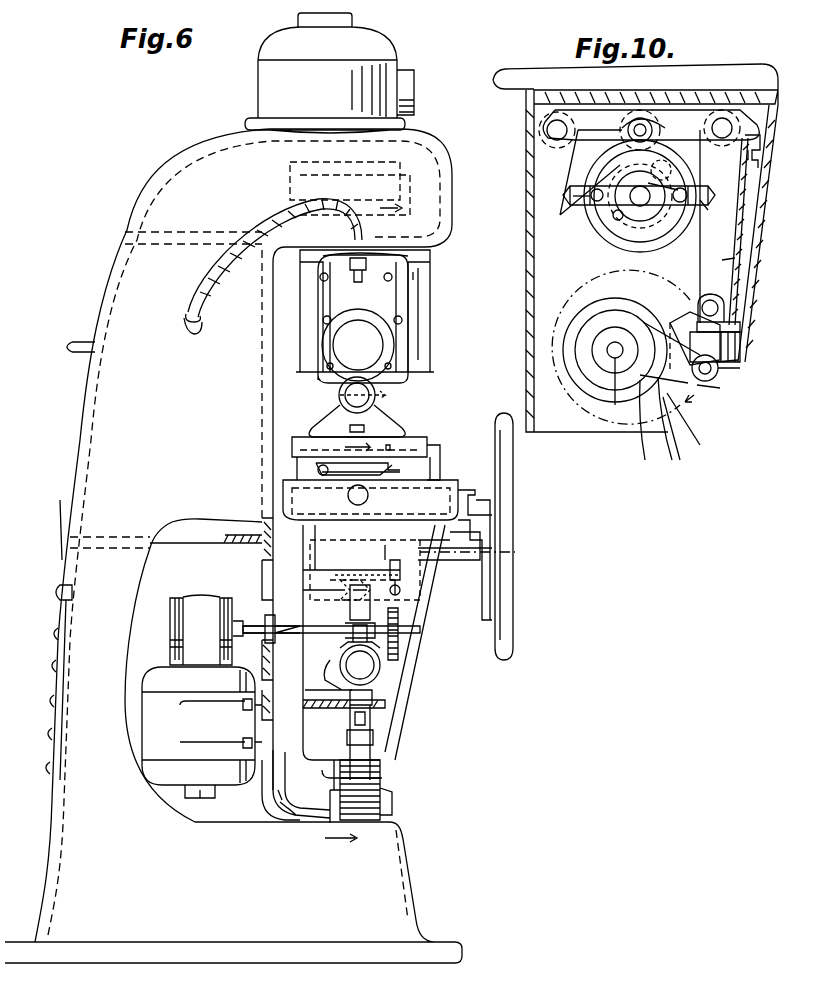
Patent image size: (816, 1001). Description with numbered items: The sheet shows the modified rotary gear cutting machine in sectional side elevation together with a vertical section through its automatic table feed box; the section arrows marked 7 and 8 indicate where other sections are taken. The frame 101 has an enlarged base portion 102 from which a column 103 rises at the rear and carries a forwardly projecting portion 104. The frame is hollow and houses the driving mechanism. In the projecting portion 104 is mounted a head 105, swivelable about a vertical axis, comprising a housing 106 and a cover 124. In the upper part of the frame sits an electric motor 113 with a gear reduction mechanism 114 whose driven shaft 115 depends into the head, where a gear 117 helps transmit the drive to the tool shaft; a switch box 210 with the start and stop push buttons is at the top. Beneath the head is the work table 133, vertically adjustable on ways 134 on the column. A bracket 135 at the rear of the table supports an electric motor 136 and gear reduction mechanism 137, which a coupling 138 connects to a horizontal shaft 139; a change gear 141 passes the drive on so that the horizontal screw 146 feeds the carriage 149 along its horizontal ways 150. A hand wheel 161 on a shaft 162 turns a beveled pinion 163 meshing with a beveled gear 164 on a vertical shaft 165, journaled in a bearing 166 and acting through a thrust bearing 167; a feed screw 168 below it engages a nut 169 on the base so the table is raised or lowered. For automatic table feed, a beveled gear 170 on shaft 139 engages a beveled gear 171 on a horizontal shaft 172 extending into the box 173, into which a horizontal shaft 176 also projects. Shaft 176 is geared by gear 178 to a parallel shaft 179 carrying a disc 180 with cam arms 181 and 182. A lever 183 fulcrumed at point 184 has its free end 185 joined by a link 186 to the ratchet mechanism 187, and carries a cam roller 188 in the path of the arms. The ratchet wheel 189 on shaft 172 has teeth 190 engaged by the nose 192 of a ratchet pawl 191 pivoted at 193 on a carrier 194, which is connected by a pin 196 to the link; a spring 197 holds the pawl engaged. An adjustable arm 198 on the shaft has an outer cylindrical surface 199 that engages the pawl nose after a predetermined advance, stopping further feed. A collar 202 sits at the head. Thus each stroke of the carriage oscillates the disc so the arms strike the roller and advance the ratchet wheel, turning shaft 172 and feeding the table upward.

In FIG. 6, the frame 101 is at (70, 513).
In FIG. 6, the base portion 102 is at (412, 845).
In FIG. 6, the column 103 is at (125, 287).
In FIG. 6, the forwardly projecting portion 104 is at (430, 204).
In FIG. 6, the head 105 is at (432, 320).
In FIG. 6, the housing 106 is at (422, 297).
In FIG. 6, the electric motor 113 is at (275, 82).
In FIG. 6, the gear reduction mechanism 114 is at (367, 185).
In FIG. 6, the driven shaft 115 is at (326, 222).
In FIG. 10, the gear 117 is at (700, 168).
In FIG. 6, the cover 124 is at (335, 300).
In FIG. 6, the work table 133 is at (410, 650).
In FIG. 6, the ways 134 is at (318, 768).
In FIG. 6, the bracket 135 is at (265, 710).
In FIG. 10, the bracket 135 is at (738, 320).
In FIG. 6, the electric motor 136 is at (160, 758).
In FIG. 6, the gear reduction mechanism 137 is at (194, 598).
In FIG. 6, the coupling 138 is at (268, 622).
In FIG. 6, the horizontal shaft 139 is at (320, 630).
In FIG. 6, the change gear 141 is at (400, 632).
In FIG. 6, the horizontal screw 146 is at (365, 498).
In FIG. 6, the carriage 149 is at (410, 440).
In FIG. 6, the horizontal ways 150 is at (388, 470).
In FIG. 6, the hand wheel 161 is at (500, 520).
In FIG. 6, the shaft 162 is at (405, 568).
In FIG. 6, the beveled pinion 163 is at (368, 536).
In FIG. 6, the beveled gear 164 is at (348, 552).
In FIG. 6, the vertical shaft 165 is at (372, 605).
In FIG. 6, the bearing 166 is at (372, 698).
In FIG. 6, the thrust bearing 167 is at (376, 740).
In FIG. 6, the feed screw 168 is at (383, 792).
In FIG. 6, the nut 169 is at (285, 823).
In FIG. 6, the beveled gear 170 is at (328, 675).
In FIG. 6, the beveled gear 171 is at (382, 668).
In FIG. 10, the horizontal shaft 172 is at (612, 408).
In FIG. 10, the box 173 is at (522, 240).
In FIG. 10, the horizontal shaft 176 is at (688, 108).
In FIG. 10, the gear 178 is at (653, 210).
In FIG. 10, the parallel shaft 179 is at (628, 205).
In FIG. 10, the disc 180 is at (636, 215).
In FIG. 10, the cam arm 181 is at (578, 206).
In FIG. 10, the cam arm 182 is at (702, 204).
In FIG. 10, the lever 183 is at (595, 118).
In FIG. 10, the fulcrum point 184 is at (547, 130).
In FIG. 10, the free end 185 is at (738, 122).
In FIG. 10, the link 186 is at (716, 260).
In FIG. 10, the ratchet mechanism 187 is at (686, 402).
In FIG. 10, the cam roller 188 is at (635, 196).
In FIG. 10, the ratchet wheel 189 is at (700, 424).
In FIG. 10, the teeth 190 is at (655, 330).
In FIG. 10, the ratchet pawl 191 is at (744, 333).
In FIG. 10, the nose 192 is at (686, 340).
In FIG. 10, the pivot 193 is at (722, 372).
In FIG. 10, the carrier 194 is at (700, 388).
In FIG. 10, the pin 196 is at (704, 303).
In FIG. 10, the spring 197 is at (742, 350).
In FIG. 10, the adjustable arm 198 is at (641, 427).
In FIG. 10, the outer cylindrical surface 199 is at (655, 376).
In FIG. 6, the collar 202 is at (388, 420).
In FIG. 6, the switch box 210 is at (416, 92).
In FIG. 6, the section line 7 is at (370, 395).
In FIG. 6, the section line 8 is at (351, 838).